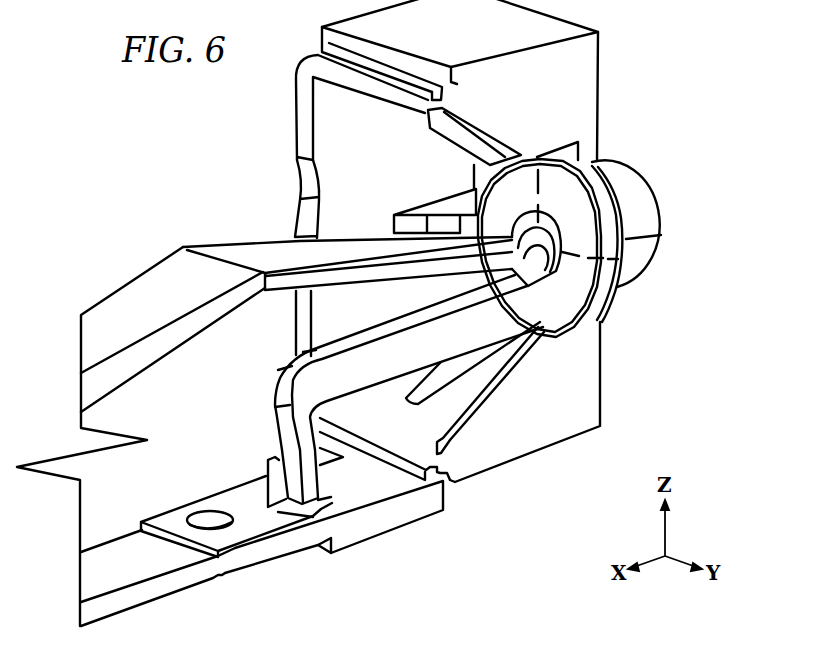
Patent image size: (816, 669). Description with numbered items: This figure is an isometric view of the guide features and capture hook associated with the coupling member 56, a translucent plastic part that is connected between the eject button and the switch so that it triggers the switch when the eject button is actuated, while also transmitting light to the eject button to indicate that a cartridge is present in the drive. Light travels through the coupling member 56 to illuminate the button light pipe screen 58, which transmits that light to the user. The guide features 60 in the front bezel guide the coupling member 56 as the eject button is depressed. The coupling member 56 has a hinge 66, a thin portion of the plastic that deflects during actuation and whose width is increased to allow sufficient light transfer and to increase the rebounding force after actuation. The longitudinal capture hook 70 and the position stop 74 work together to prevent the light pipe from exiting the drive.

The coupling member 56 is at (115, 318).
The button light pipe screen 58 is at (642, 185).
The guide features 60 is at (488, 137).
The hinge 66 is at (190, 243).
The longitudinal capture hook 70 is at (298, 430).
The position stop 74 is at (330, 505).